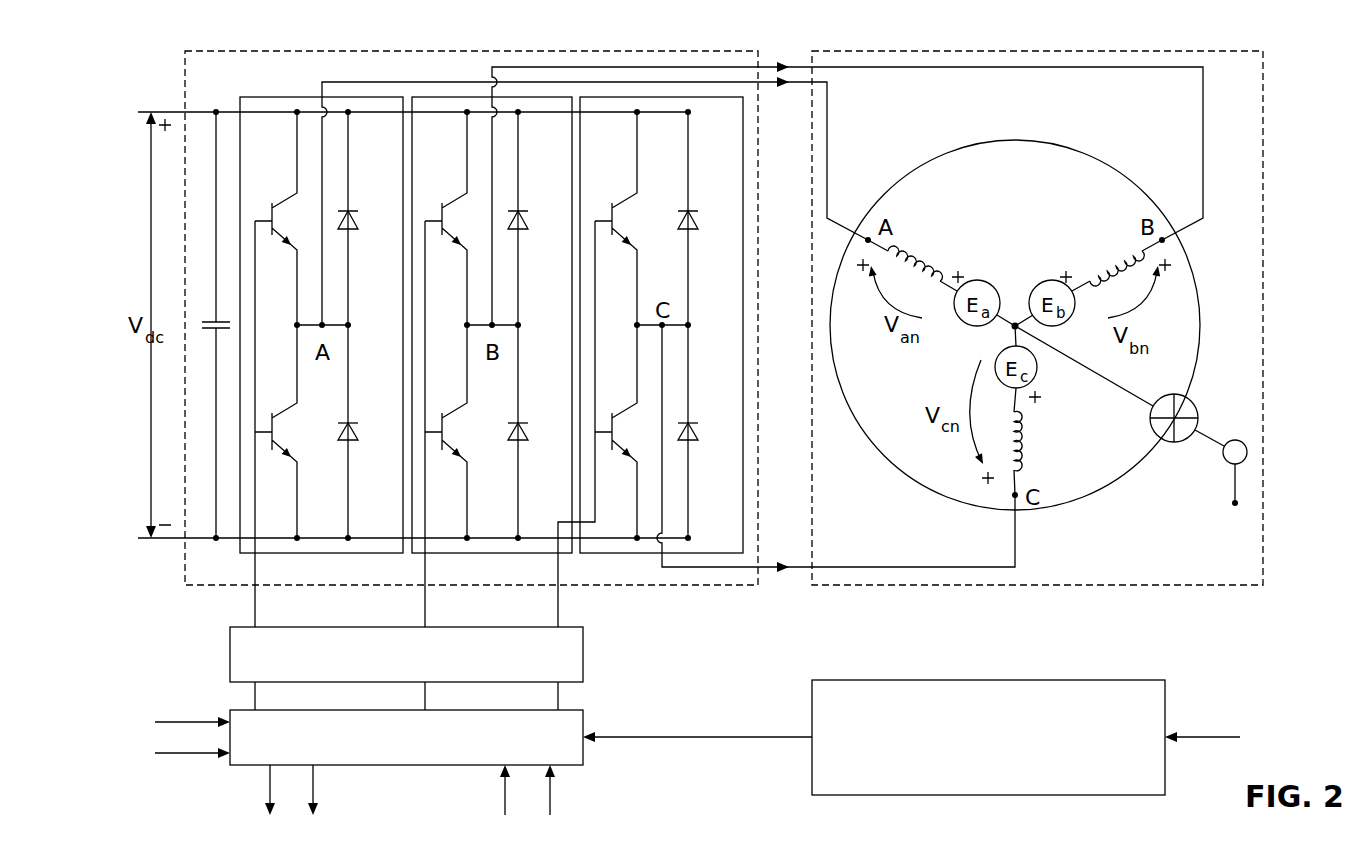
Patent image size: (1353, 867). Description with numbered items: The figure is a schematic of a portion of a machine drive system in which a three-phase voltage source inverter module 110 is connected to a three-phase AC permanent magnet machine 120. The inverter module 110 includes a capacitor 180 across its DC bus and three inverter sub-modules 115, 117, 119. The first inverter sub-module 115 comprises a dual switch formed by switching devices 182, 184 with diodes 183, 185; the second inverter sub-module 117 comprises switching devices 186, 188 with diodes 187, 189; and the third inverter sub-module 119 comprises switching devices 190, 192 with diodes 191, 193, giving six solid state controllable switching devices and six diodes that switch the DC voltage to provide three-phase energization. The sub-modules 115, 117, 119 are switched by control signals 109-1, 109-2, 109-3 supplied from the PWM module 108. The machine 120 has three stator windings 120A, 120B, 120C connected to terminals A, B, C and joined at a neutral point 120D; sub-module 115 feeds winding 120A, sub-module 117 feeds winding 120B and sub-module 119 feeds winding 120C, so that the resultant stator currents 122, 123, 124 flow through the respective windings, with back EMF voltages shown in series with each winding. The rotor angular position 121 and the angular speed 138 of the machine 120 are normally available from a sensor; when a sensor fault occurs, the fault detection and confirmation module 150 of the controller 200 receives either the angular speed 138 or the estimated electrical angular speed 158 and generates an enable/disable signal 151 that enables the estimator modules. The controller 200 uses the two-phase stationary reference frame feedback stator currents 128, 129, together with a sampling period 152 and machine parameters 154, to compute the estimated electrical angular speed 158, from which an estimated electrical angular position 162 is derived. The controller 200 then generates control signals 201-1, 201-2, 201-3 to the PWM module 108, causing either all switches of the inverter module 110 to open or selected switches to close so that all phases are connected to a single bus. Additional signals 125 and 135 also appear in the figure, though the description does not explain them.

The inverter module 110 is at (245, 51).
The capacitor 180 is at (216, 148).
The switching device 182 is at (255, 222).
The switching device 184 is at (255, 433).
The diode 183 is at (355, 211).
The diode 185 is at (355, 423).
The switching device 186 is at (427, 222).
The switching device 188 is at (427, 433).
The diode 187 is at (525, 211).
The diode 189 is at (525, 423).
The switching device 190 is at (597, 222).
The switching device 192 is at (597, 433).
The diode 191 is at (695, 211).
The diode 193 is at (695, 423).
The first inverter sub-module 115 is at (300, 555).
The second inverter sub-module 117 is at (490, 555).
The third inverter sub-module 119 is at (635, 555).
The control signal 109-1 is at (255, 618).
The control signal 109-2 is at (424, 618).
The control signal 109-3 is at (560, 606).
The stator current 122 is at (829, 132).
The stator current 123 is at (1055, 66).
The stator current 124 is at (768, 572).
The three-phase AC PMM 120 is at (1201, 586).
The machine winding 120A is at (923, 262).
The machine winding 120B is at (1115, 268).
The machine winding 120C is at (1022, 448).
The neutral point 120D is at (1013, 320).
The position sensor 125 is at (1192, 397).
The sensor output 135 is at (1222, 461).
The angular position of rotor 121 is at (1228, 490).
The PWM module 108 is at (230, 652).
The control signal 201-1 is at (255, 700).
The control signal 201-2 is at (424, 706).
The control signal 201-3 is at (558, 706).
The controller 200 is at (583, 752).
The two-phase stationary reference frame feedback stator current 128 is at (197, 718).
The two-phase stationary reference frame feedback stator current 129 is at (197, 757).
The estimated electrical angular speed 158 is at (268, 781).
The estimated electrical angular position 162 is at (315, 781).
The machine parameters 154 is at (503, 785).
The sampling period 152 is at (552, 785).
The enable/disable signal 151 is at (693, 735).
The fault detection and confirmation module 150 is at (1103, 680).
The angular speed 138 is at (1225, 737).